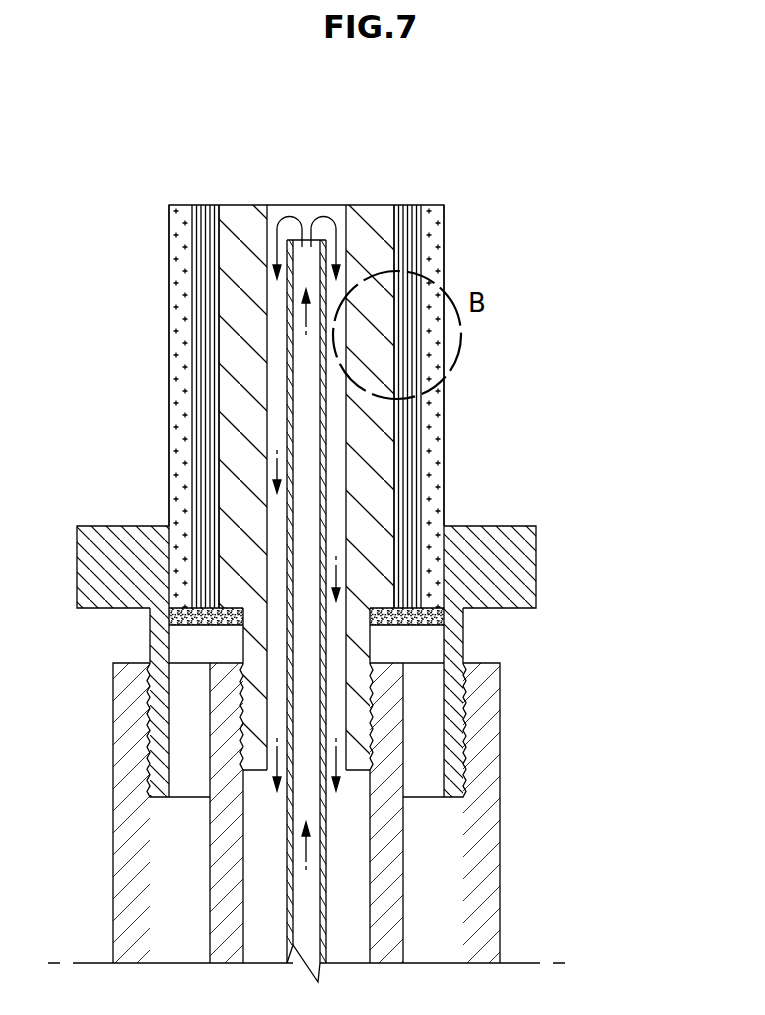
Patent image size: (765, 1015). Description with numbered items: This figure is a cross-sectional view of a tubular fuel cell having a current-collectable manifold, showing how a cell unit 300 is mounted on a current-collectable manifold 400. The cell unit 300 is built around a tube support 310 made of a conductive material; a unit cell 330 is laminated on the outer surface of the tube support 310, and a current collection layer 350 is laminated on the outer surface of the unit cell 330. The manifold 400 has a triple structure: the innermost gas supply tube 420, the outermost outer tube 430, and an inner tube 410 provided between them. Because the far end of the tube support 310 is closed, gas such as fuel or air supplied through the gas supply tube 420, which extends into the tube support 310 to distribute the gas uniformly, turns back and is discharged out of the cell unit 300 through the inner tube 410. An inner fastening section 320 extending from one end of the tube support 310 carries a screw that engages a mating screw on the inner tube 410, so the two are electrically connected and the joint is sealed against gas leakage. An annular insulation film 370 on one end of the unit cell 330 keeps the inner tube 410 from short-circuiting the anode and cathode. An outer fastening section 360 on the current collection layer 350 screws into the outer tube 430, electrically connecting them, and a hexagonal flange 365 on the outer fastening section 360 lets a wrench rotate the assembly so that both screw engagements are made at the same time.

The cell unit 300 is at (365, 134).
The tube support 310 is at (374, 224).
The inner fastening section 320 is at (358, 717).
The unit cell 330 is at (420, 219).
The current collection layer 350 is at (437, 204).
The outer fastening section 360 is at (458, 686).
The hexagonal flange 365 is at (515, 572).
The insulation film 370 is at (442, 615).
The current-collectable manifold 400 is at (645, 811).
The inner tube 410 is at (392, 922).
The gas supply tube 420 is at (323, 867).
The outer tube 430 is at (485, 829).